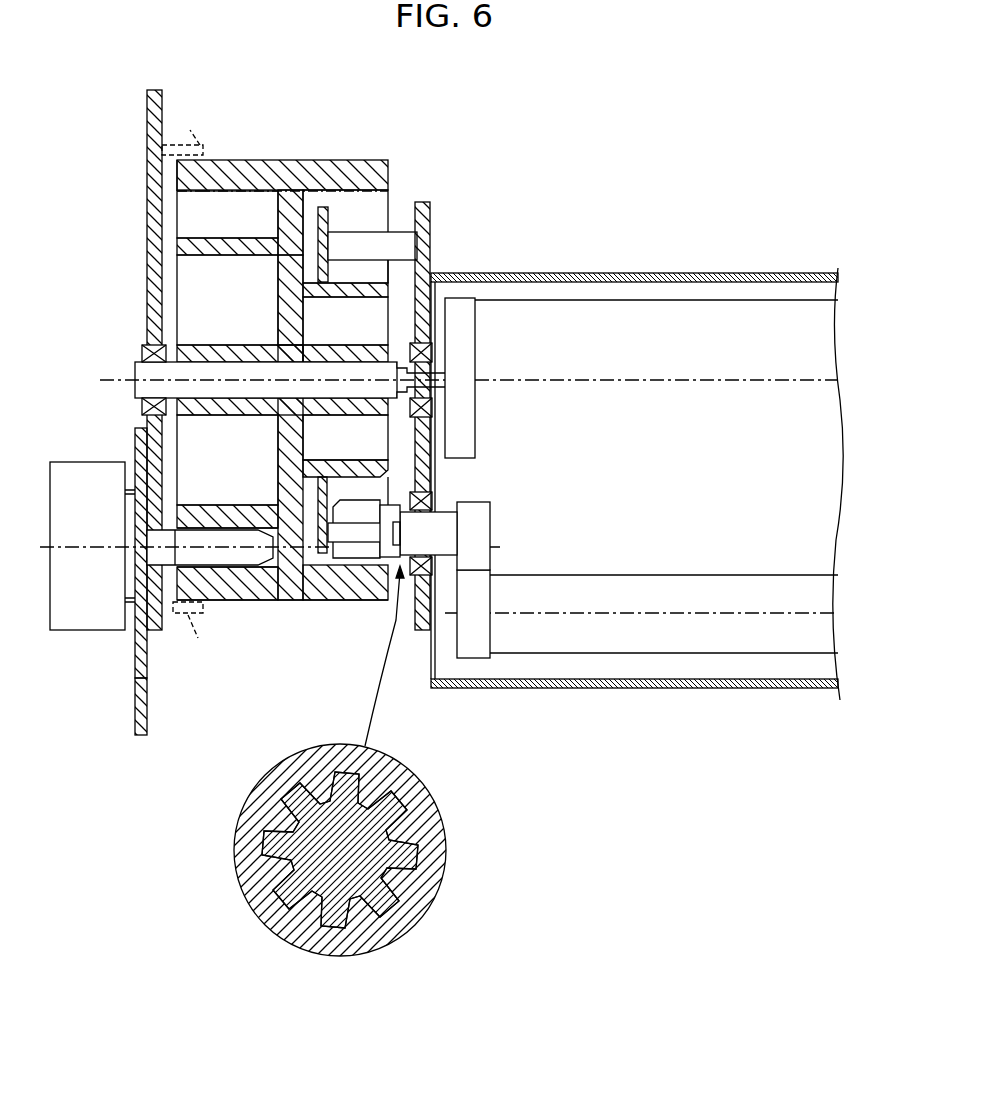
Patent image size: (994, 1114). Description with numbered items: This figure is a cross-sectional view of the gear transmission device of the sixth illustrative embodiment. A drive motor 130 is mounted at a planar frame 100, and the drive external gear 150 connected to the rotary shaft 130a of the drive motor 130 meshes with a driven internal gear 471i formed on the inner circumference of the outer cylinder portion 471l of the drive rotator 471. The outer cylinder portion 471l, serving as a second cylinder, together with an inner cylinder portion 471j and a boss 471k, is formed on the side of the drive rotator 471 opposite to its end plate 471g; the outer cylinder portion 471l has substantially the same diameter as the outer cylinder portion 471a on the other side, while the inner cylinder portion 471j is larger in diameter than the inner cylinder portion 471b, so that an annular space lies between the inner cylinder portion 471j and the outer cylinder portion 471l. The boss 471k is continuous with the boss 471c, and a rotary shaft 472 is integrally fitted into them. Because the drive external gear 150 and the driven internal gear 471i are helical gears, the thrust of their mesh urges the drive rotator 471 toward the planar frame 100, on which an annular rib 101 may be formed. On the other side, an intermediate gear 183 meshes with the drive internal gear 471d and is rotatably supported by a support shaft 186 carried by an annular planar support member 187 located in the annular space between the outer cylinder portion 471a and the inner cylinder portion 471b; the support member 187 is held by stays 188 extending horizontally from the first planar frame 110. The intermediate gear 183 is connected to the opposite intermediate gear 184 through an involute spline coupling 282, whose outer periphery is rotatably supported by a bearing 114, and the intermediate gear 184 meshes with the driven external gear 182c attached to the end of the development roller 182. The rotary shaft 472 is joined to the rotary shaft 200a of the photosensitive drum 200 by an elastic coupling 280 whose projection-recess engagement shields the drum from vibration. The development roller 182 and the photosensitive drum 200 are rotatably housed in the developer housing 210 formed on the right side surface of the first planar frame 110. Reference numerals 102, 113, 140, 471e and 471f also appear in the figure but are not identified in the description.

The planar frame 100 is at (149, 280).
The annular rib 101 is at (189, 381).
The bearing 102 is at (147, 352).
The first planar frame 110 is at (430, 238).
The bearing 113 is at (440, 352).
The bearing 114 is at (432, 498).
The drive motor 130 is at (92, 462).
The rotary shaft of the drive motor 130a is at (143, 640).
The frame 140 is at (135, 688).
The drive external gear 150 is at (220, 560).
The development roller 182 is at (700, 590).
The driven external gear 182c is at (473, 652).
The intermediate gear 183 is at (356, 500).
The intermediate gear 184 is at (488, 522).
The support shaft 186 is at (362, 545).
The annular planar support member 187 is at (292, 221).
The stays 188 is at (346, 236).
The photosensitive drum 200 is at (756, 312).
The rotary shaft of the photosensitive drum 200a is at (440, 392).
The developer housing 210 is at (632, 273).
The coupling 280 is at (403, 376).
The coupling 282 is at (397, 505).
The drive rotator 471 is at (286, 161).
The outer cylinder portion 471a is at (388, 177).
The inner cylinder portion 471b is at (387, 294).
The boss 471c is at (320, 348).
The drive internal gear 471d is at (319, 560).
The housing boundary line 471e is at (388, 192).
The housing side wall 471f is at (388, 276).
The end plate 471g is at (292, 300).
The driven internal gear 471i is at (198, 193).
The inner cylinder portion 471j is at (212, 250).
The boss 471k is at (207, 333).
The outer cylinder portion 471l is at (180, 190).
The rotary shaft 472 is at (137, 385).